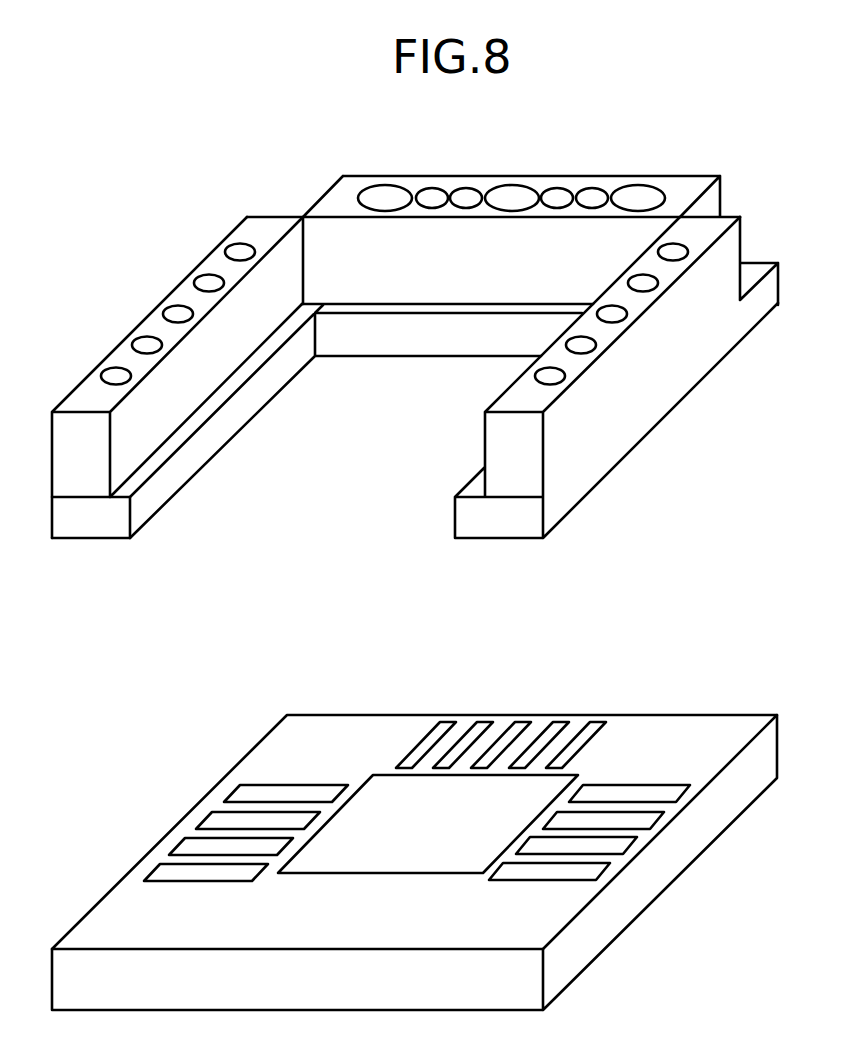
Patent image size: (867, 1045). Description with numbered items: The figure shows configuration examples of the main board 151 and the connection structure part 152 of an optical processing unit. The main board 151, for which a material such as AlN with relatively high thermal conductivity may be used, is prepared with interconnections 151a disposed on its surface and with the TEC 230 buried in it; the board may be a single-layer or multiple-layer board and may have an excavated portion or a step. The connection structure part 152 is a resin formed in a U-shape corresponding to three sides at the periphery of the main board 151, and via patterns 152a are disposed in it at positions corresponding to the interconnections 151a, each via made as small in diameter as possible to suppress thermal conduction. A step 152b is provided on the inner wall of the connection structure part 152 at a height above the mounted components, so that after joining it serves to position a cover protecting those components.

The main board 151 is at (778, 747).
The interconnections 151a is at (593, 872).
The connection structure part 152 is at (778, 285).
The via patterns 152a is at (510, 186).
The step 152b is at (162, 473).
The TEC 230 is at (378, 808).